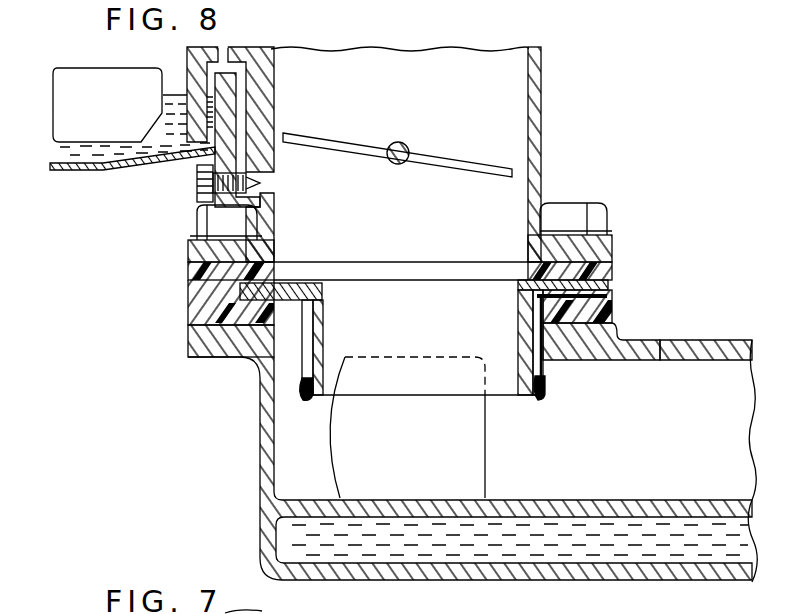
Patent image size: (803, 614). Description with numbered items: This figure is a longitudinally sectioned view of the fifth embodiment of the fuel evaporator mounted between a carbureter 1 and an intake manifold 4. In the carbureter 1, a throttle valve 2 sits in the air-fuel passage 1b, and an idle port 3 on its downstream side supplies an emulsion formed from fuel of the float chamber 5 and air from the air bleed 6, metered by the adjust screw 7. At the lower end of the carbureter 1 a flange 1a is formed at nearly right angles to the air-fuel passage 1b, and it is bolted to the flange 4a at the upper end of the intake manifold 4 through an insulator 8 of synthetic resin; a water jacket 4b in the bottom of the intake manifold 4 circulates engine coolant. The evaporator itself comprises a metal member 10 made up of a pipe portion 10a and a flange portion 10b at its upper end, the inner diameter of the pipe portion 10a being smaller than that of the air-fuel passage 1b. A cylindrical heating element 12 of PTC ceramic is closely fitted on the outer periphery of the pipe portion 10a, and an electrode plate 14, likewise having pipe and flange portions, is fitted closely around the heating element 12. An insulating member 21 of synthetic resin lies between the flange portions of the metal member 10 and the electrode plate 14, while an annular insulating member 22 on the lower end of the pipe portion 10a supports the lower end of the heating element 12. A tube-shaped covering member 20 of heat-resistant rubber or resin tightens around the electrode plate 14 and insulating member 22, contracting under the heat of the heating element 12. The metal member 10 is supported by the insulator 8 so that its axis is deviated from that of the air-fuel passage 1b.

In FIG. 8, the carbureter 1 is at (536, 129).
In FIG. 8, the flange 1a is at (585, 252).
In FIG. 8, the air-fuel passage 1b is at (273, 99).
In FIG. 8, the throttle valve 2 is at (473, 161).
In FIG. 8, the idle port 3 is at (262, 183).
In FIG. 8, the intake manifold 4 is at (712, 472).
In FIG. 8, the flange 4a is at (214, 345).
In FIG. 8, the water jacket 4b is at (610, 553).
In FIG. 8, the float chamber 5 is at (160, 108).
In FIG. 8, the air bleed 6 is at (223, 56).
In FIG. 7, the air bleed 6 is at (232, 612).
In FIG. 8, the adjust screw 7 is at (200, 192).
In FIG. 8, the insulator 8 is at (597, 272).
In FIG. 8, the metal member 10 is at (323, 372).
In FIG. 8, the pipe portion 10a is at (322, 340).
In FIG. 8, the flange portion 10b is at (314, 280).
In FIG. 8, the heating element 12 is at (518, 380).
In FIG. 8, the electrode plate 14 is at (545, 382).
In FIG. 8, the covering member 20 is at (544, 367).
In FIG. 8, the insulating member 21 is at (607, 293).
In FIG. 8, the insulating member 22 is at (535, 397).